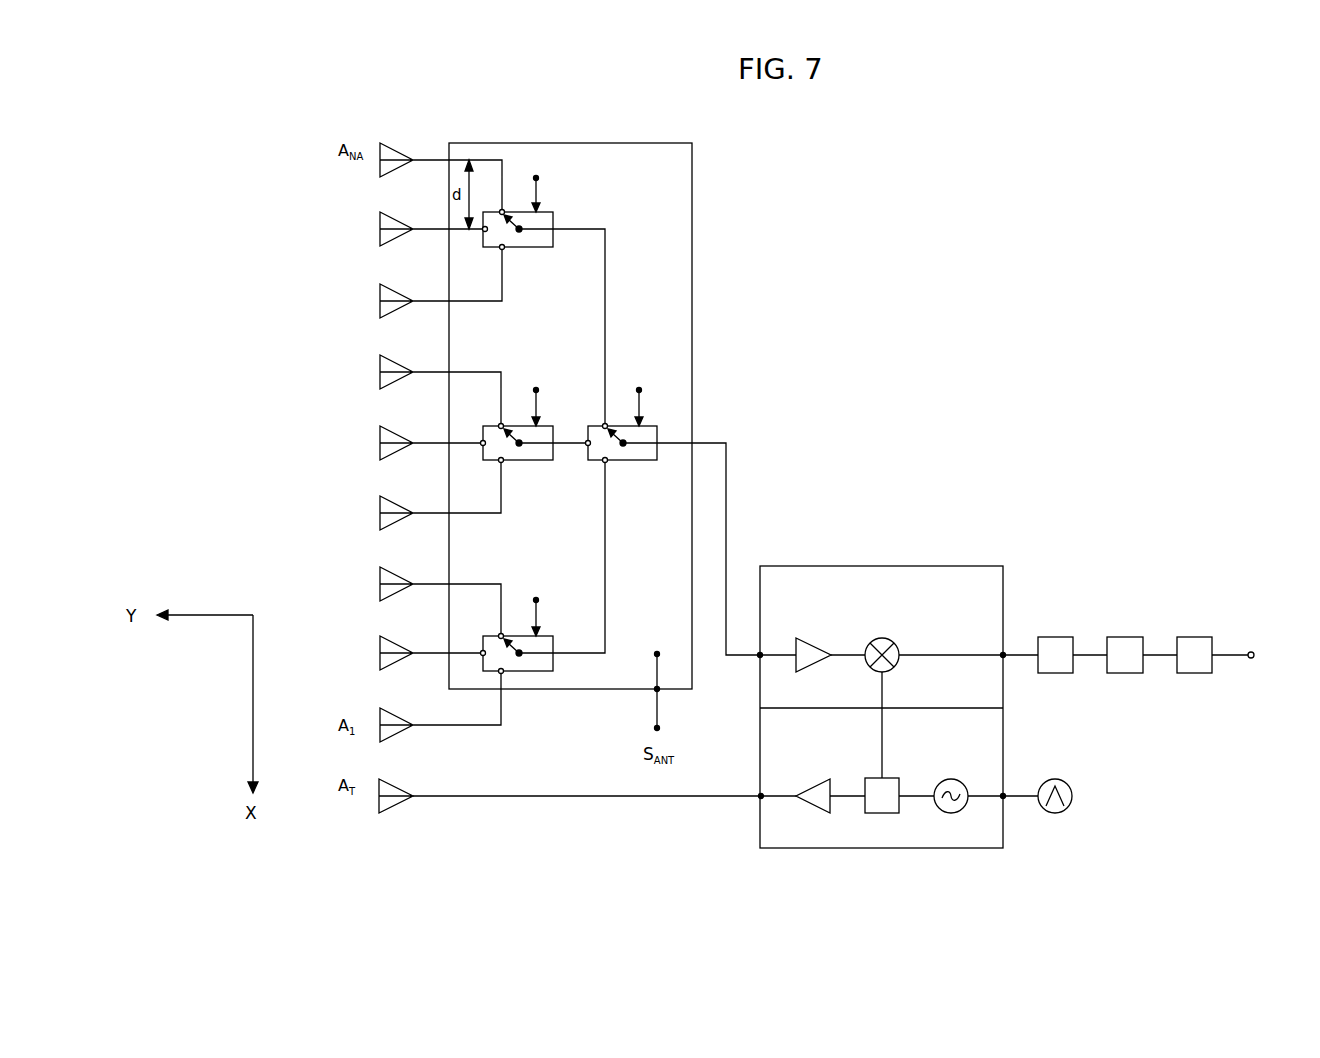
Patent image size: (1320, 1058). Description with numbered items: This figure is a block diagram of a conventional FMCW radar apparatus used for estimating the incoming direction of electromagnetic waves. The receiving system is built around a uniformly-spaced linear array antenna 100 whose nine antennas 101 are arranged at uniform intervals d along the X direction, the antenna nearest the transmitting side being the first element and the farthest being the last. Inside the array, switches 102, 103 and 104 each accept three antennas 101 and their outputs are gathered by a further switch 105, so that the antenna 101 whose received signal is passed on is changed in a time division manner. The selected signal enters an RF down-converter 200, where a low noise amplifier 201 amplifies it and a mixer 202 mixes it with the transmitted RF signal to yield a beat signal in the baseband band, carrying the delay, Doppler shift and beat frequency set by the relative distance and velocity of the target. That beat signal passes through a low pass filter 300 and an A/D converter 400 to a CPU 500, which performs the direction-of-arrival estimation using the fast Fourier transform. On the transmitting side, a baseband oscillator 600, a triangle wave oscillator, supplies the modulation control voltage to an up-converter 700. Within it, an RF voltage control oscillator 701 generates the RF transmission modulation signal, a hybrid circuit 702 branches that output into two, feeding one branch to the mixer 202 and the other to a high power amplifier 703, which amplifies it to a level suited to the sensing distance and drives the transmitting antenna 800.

The uniformly-spaced linear array antenna 100 is at (692, 233).
The antenna 101 is at (380, 223).
The switch 102 is at (541, 212).
The switch 103 is at (543, 426).
The switch 104 is at (543, 636).
The switch 105 is at (648, 426).
The RF down-converter 200 is at (884, 566).
The low noise amplifier 201 is at (796, 660).
The mixer 202 is at (899, 660).
The low pass filter 300 is at (1052, 637).
The A/D converter 400 is at (1124, 637).
The CPU 500 is at (1187, 637).
The baseband oscillator 600 is at (1051, 814).
The up-converter 700 is at (737, 814).
The RF voltage control oscillator 701 is at (948, 814).
The hybrid circuit 702 is at (882, 814).
The high power amplifier 703 is at (808, 806).
The transmitting antenna 800 is at (400, 809).